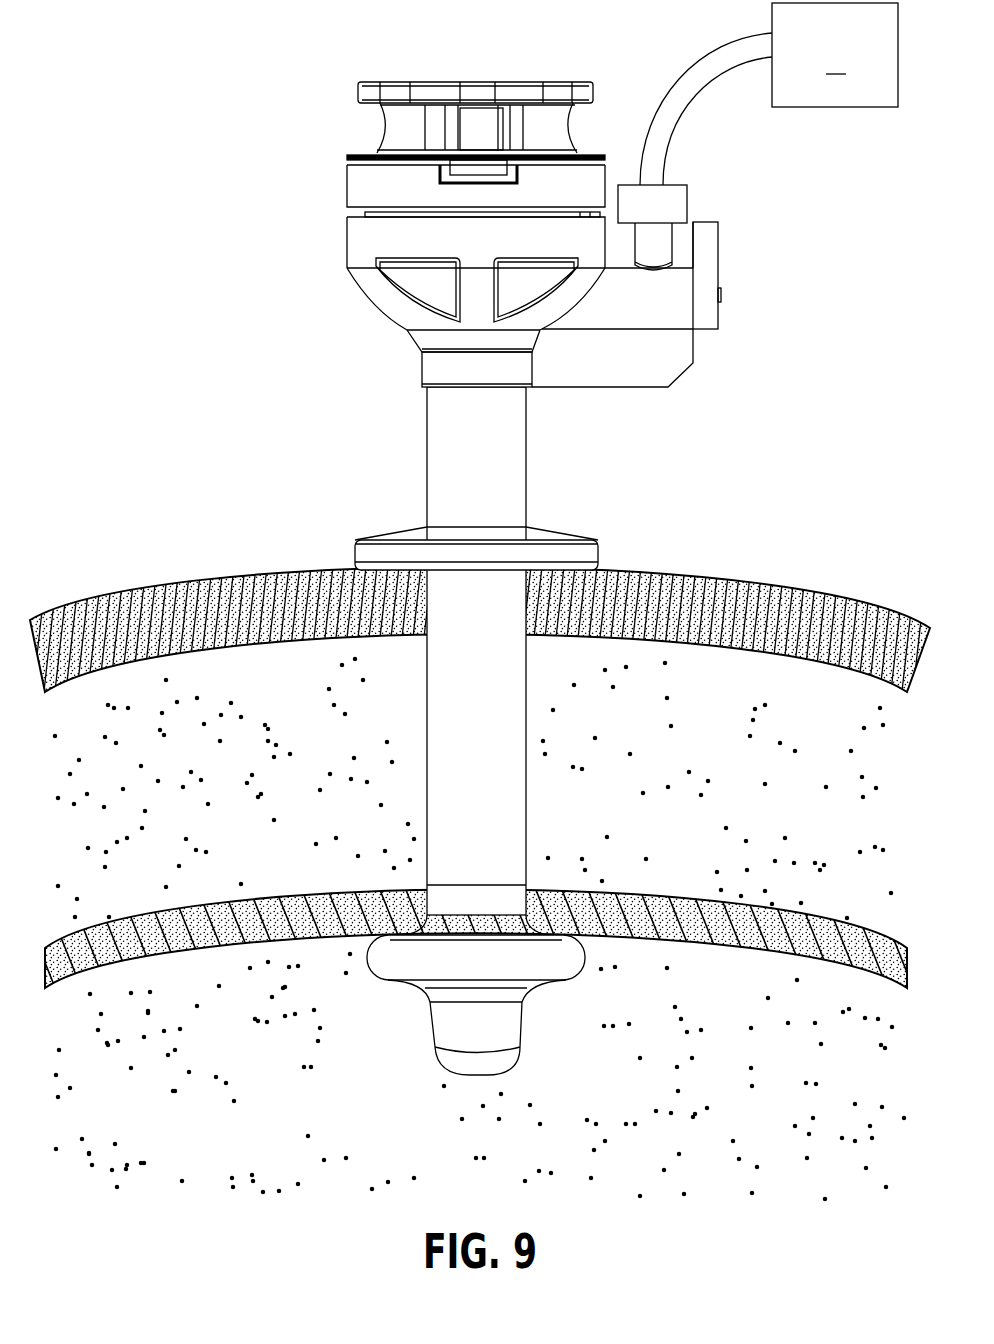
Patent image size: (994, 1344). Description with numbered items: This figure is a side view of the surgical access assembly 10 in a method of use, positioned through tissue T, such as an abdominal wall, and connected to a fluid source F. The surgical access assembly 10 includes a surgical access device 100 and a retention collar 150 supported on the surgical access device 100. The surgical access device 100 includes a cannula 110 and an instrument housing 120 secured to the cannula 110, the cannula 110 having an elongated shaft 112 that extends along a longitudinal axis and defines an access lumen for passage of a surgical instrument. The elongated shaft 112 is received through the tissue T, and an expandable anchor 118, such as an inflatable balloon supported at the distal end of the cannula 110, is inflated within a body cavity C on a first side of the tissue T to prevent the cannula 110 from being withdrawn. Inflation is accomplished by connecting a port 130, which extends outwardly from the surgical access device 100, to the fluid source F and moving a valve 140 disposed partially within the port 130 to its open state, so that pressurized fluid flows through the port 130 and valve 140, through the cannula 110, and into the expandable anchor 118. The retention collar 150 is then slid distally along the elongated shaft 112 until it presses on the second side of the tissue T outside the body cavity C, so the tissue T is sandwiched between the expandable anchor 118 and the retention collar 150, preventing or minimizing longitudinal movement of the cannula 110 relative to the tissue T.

The surgical access assembly 10 is at (350, 83).
The surgical access device 100 is at (318, 232).
The cannula 110 is at (435, 643).
The elongated shaft 112 is at (427, 435).
The expandable anchor 118 is at (402, 962).
The instrument housing 120 is at (358, 310).
The port 130 is at (703, 392).
The valve 140 is at (730, 263).
The retention collar 150 is at (583, 540).
The tissue T is at (728, 577).
The body cavity C is at (635, 1065).
The fluid source F is at (835, 55).